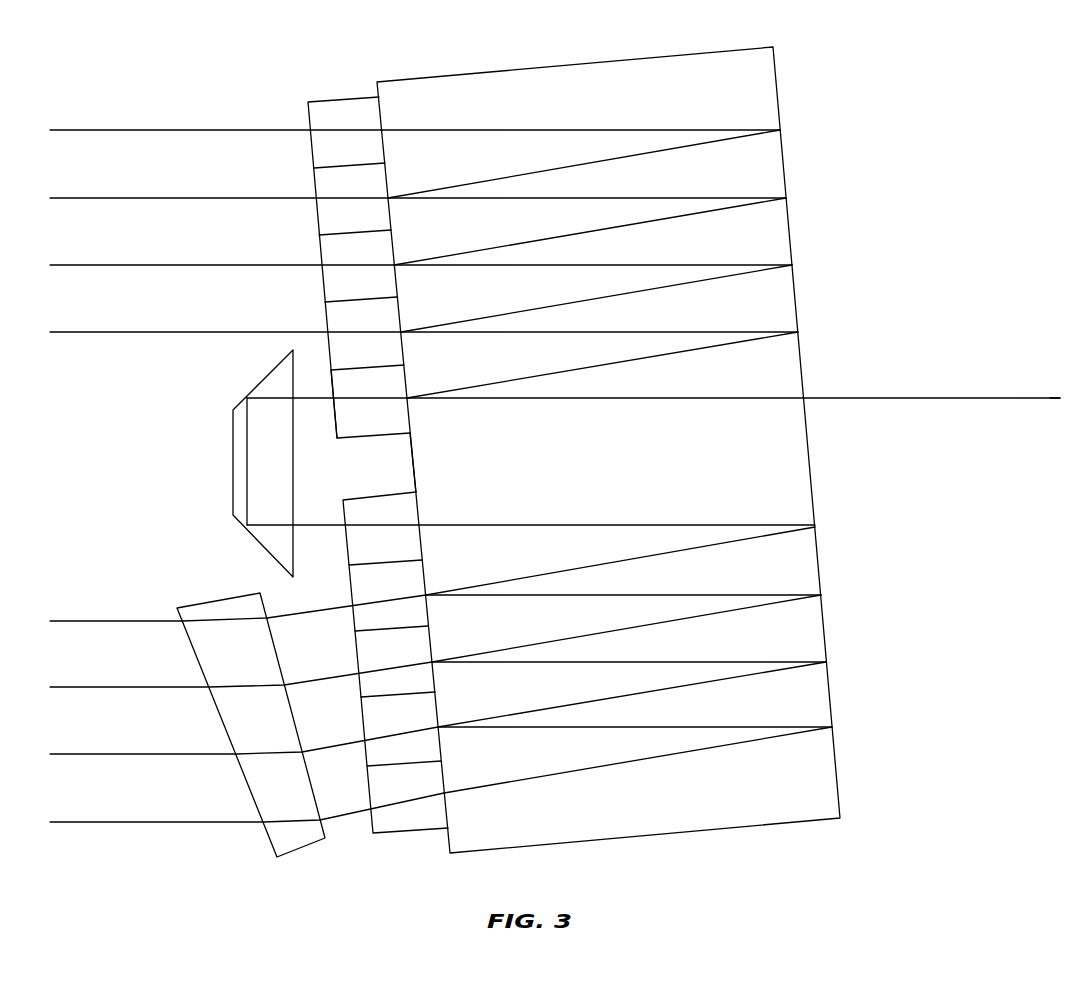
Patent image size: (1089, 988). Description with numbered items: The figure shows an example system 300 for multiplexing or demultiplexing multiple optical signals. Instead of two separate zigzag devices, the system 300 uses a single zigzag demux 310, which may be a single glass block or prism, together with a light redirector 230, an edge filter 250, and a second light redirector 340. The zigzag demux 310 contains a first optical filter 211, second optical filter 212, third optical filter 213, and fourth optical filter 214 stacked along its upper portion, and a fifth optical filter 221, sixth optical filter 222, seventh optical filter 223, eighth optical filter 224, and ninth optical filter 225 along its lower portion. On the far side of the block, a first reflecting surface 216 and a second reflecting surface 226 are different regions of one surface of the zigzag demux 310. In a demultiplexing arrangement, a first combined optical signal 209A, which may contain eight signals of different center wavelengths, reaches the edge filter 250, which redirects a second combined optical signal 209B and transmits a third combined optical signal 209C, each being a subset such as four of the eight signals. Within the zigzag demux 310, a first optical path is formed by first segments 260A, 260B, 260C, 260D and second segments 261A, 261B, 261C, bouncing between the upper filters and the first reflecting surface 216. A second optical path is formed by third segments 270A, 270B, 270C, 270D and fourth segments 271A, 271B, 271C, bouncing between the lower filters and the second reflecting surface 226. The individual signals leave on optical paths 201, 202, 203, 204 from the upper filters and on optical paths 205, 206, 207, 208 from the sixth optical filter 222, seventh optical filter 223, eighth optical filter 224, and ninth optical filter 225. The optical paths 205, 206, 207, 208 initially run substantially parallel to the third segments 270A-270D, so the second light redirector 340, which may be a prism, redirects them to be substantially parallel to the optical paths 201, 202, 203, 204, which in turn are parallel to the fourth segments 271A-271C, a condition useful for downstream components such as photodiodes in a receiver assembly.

The system 300 is at (995, 59).
The zigzag demux 310 is at (494, 60).
The first reflecting surface 216 is at (788, 59).
The second reflecting surface 226 is at (827, 497).
The optical path 201 is at (100, 130).
The optical path 202 is at (100, 198).
The optical path 203 is at (100, 265).
The optical path 204 is at (100, 332).
The optical path 205 is at (100, 621).
The optical path 206 is at (100, 687).
The optical path 207 is at (100, 754).
The optical path 208 is at (100, 822).
The first combined optical signal 209A is at (1010, 398).
The second combined optical signal 209B is at (647, 360).
The third combined optical signal 209C is at (507, 528).
The first optical filter 211 is at (362, 159).
The second optical filter 212 is at (366, 226).
The third optical filter 213 is at (372, 293).
The fourth optical filter 214 is at (378, 360).
The edge filter 250 is at (384, 428).
The fifth optical filter 221 is at (397, 552).
The sixth optical filter 222 is at (401, 591).
The seventh optical filter 223 is at (407, 659).
The eighth optical filter 224 is at (412, 726).
The ninth optical filter 225 is at (418, 792).
The light redirector 230 is at (233, 472).
The second light redirector 340 is at (302, 852).
The first segment 260A is at (508, 136).
The first segment 260B is at (508, 203).
The first segment 260C is at (508, 268).
The first segment 260D is at (508, 335).
The second segment 261A is at (647, 157).
The second segment 261B is at (647, 224).
The second segment 261C is at (647, 292).
The third segment 270A is at (645, 555).
The third segment 270B is at (645, 622).
The third segment 270C is at (645, 690).
The third segment 270D is at (645, 758).
The fourth segment 271A is at (507, 595).
The fourth segment 271B is at (507, 662).
The fourth segment 271C is at (507, 729).